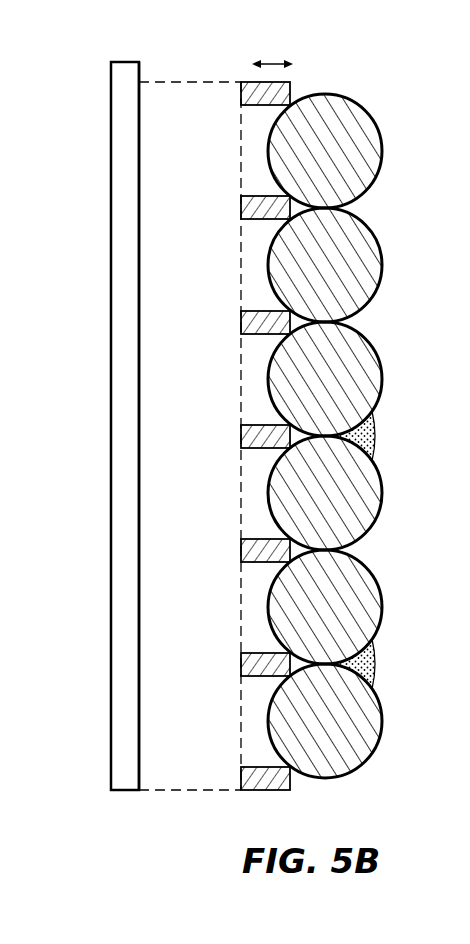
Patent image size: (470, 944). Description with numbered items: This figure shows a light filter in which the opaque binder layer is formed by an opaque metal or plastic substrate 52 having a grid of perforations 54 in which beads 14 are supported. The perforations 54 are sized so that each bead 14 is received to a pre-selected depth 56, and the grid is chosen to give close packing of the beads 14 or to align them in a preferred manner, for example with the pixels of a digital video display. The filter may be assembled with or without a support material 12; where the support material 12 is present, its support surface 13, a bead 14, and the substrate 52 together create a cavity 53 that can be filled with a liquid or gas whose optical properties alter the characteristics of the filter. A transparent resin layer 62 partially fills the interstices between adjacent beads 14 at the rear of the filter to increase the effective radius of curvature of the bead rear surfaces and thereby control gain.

The support material 12 is at (117, 792).
The support surface 13 is at (138, 770).
The beads 14 is at (355, 748).
The opaque substrate 52 is at (290, 790).
The cavity 53 is at (250, 287).
The perforations 54 is at (242, 137).
The pre-selected depth 56 is at (272, 62).
The resin layer 62 is at (372, 432).